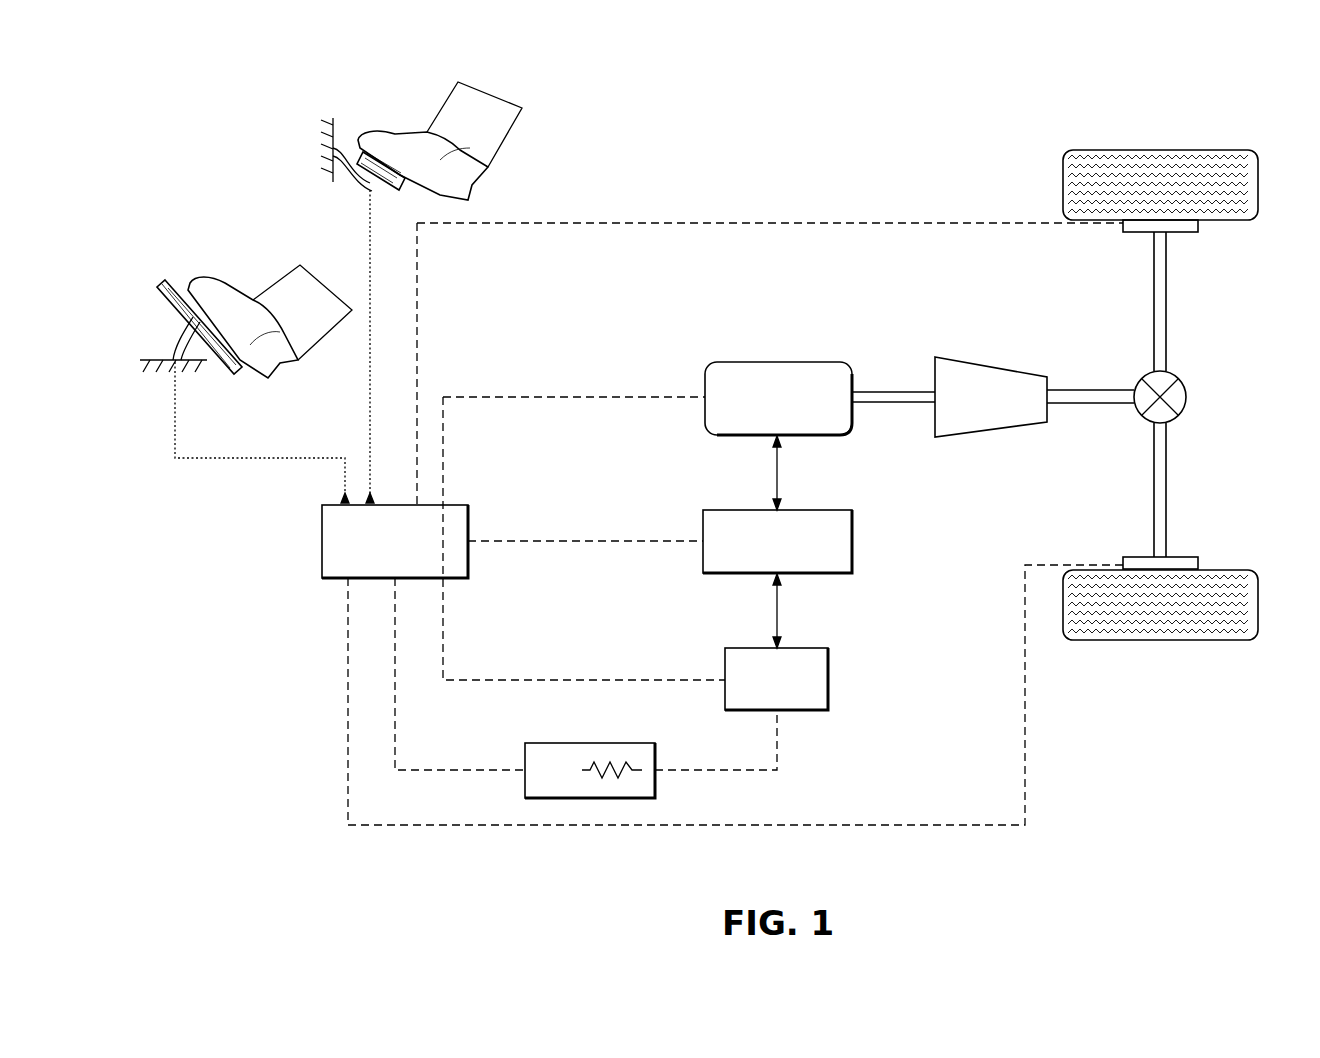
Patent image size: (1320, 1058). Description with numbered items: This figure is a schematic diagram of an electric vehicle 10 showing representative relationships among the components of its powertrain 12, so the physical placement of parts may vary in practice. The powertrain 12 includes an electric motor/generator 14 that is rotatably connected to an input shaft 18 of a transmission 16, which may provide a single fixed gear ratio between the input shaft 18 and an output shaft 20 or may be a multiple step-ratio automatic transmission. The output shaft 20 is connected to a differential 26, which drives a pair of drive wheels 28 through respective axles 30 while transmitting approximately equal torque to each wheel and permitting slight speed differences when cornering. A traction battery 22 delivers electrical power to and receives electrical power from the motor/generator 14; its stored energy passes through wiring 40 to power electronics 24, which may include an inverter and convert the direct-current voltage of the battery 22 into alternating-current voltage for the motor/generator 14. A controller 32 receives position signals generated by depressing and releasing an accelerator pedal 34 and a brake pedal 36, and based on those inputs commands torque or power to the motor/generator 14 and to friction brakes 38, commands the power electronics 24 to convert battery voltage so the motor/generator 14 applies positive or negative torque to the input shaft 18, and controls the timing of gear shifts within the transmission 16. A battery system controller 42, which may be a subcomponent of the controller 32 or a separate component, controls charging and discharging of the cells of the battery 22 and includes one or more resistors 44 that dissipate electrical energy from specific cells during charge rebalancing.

The electric vehicle 10 is at (953, 63).
The powertrain 12 is at (830, 285).
The electric motor/generator (M/G) 14 is at (705, 383).
The transmission 16 is at (990, 362).
The input shaft 18 is at (898, 392).
The output shaft 20 is at (1080, 390).
The traction battery 22 is at (725, 665).
The power electronics 24 is at (703, 528).
The differential 26 is at (1187, 397).
The drive wheels 28 is at (1162, 150).
The axles 30 is at (1168, 297).
The controller 32 is at (322, 540).
The accelerator pedal 34 is at (233, 260).
The brake pedal 36 is at (410, 97).
The friction brakes 38 is at (1198, 226).
The wiring 40 is at (781, 622).
The battery system controller 42 is at (578, 743).
The resistors 44 is at (607, 765).